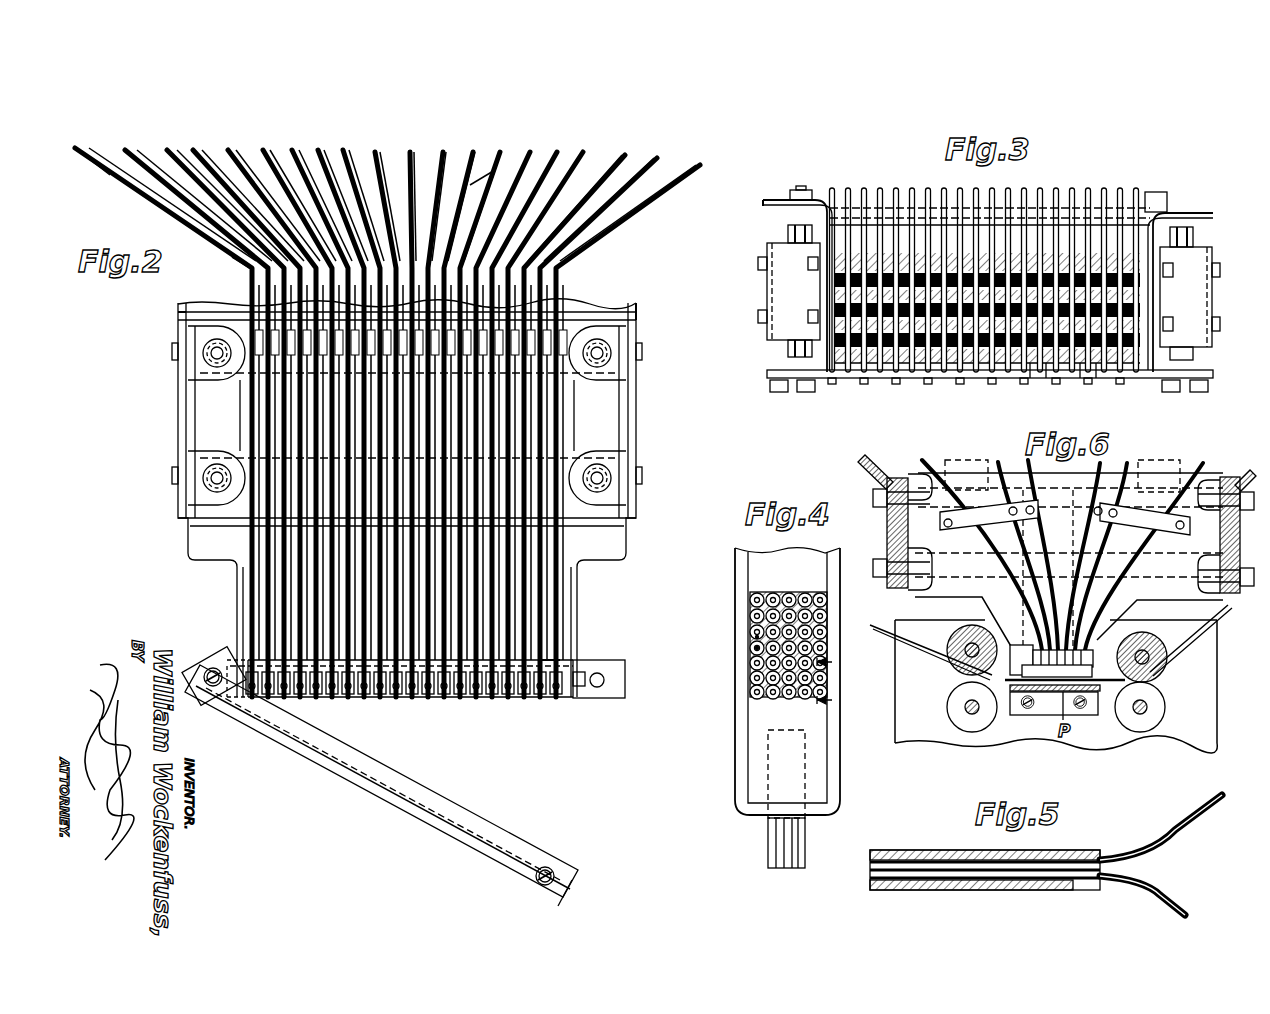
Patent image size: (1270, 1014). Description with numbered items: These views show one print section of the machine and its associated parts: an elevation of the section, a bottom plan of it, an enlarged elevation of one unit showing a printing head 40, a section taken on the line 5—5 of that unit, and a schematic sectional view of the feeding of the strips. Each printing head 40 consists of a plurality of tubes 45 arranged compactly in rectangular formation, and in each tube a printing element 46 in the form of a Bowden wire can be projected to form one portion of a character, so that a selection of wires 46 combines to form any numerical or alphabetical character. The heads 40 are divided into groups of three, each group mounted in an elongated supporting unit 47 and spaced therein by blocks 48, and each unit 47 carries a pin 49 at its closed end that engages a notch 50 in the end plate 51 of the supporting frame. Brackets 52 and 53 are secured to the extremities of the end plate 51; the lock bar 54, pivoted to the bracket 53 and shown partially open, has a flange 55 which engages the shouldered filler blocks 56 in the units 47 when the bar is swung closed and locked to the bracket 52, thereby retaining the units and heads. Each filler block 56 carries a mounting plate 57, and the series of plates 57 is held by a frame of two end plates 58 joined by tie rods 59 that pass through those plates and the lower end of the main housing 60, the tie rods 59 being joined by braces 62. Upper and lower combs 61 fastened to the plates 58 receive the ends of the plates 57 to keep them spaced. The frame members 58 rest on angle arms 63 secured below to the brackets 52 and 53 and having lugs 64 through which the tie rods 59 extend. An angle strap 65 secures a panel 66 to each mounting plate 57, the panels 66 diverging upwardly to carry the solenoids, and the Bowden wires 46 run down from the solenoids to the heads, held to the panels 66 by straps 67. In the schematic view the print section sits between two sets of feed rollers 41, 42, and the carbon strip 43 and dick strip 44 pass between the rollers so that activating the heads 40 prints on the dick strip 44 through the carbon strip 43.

In FIG. 3, the printing head 40 is at (866, 375).
In FIG. 4, the printing head 40 is at (748, 607).
In FIG. 6, the feed roller 41 is at (1160, 710).
In FIG. 6, the feed roller 42 is at (950, 706).
In FIG. 6, the carbon strip 43 is at (876, 628).
In FIG. 6, the dick strip 44 is at (882, 632).
In FIG. 4, the tube 45 is at (757, 678).
In FIG. 5, the tube 45 is at (1090, 858).
In FIG. 2, the printing element 46 is at (295, 162).
In FIG. 4, the printing element 46 is at (757, 648).
In FIG. 6, the printing element 46 is at (1103, 466).
In FIG. 5, the printing element 46 is at (1126, 874).
In FIG. 3, the supporting unit 47 is at (920, 378).
In FIG. 4, the supporting unit 47 is at (737, 760).
In FIG. 3, the block 48 is at (958, 378).
In FIG. 4, the block 48 is at (760, 562).
In FIG. 5, the block 48 is at (964, 889).
In FIG. 3, the pin 49 is at (993, 378).
In FIG. 4, the pin 49 is at (775, 838).
In FIG. 6, the pin 49 is at (1105, 692).
In FIG. 3, the notch 50 is at (1036, 378).
In FIG. 3, the end plate 51 is at (1086, 378).
In FIG. 6, the end plate 51 is at (1102, 650).
In FIG. 2, the bracket 52 is at (608, 697).
In FIG. 3, the bracket 52 is at (1180, 216).
In FIG. 2, the bracket 53 is at (240, 660).
In FIG. 3, the bracket 53 is at (767, 208).
In FIG. 2, the lock bar 54 is at (420, 776).
In FIG. 3, the lock bar 54 is at (783, 202).
In FIG. 6, the lock bar 54 is at (1008, 692).
In FIG. 2, the flange 55 is at (360, 790).
In FIG. 3, the flange 55 is at (873, 215).
In FIG. 2, the filler block 56 is at (545, 656).
In FIG. 3, the filler block 56 is at (1028, 240).
In FIG. 2, the mounting plate 57 is at (255, 330).
In FIG. 3, the mounting plate 57 is at (946, 190).
In FIG. 6, the mounting plate 57 is at (963, 600).
In FIG. 2, the end plate 58 is at (192, 322).
In FIG. 6, the end plate 58 is at (888, 548).
In FIG. 2, the tie rod 59 is at (213, 355).
In FIG. 3, the tie rod 59 is at (1195, 240).
In FIG. 6, the tie rod 59 is at (922, 560).
In FIG. 2, the main housing 60 is at (622, 312).
In FIG. 6, the main housing 60 is at (877, 470).
In FIG. 2, the comb 61 is at (588, 312).
In FIG. 6, the comb 61 is at (912, 478).
In FIG. 2, the brace 62 is at (218, 412).
In FIG. 6, the brace 62 is at (1213, 560).
In FIG. 2, the angle arm 63 is at (237, 590).
In FIG. 3, the angle arm 63 is at (790, 288).
In FIG. 6, the angle arm 63 is at (1010, 540).
In FIG. 2, the lug 64 is at (195, 332).
In FIG. 6, the lug 64 is at (1062, 551).
In FIG. 2, the angle strap 65 is at (232, 257).
In FIG. 6, the angle strap 65 is at (970, 462).
In FIG. 2, the panel 66 is at (128, 153).
In FIG. 2, the strap 67 is at (505, 182).
In FIG. 4, the section line 5- 5 is at (839, 704).